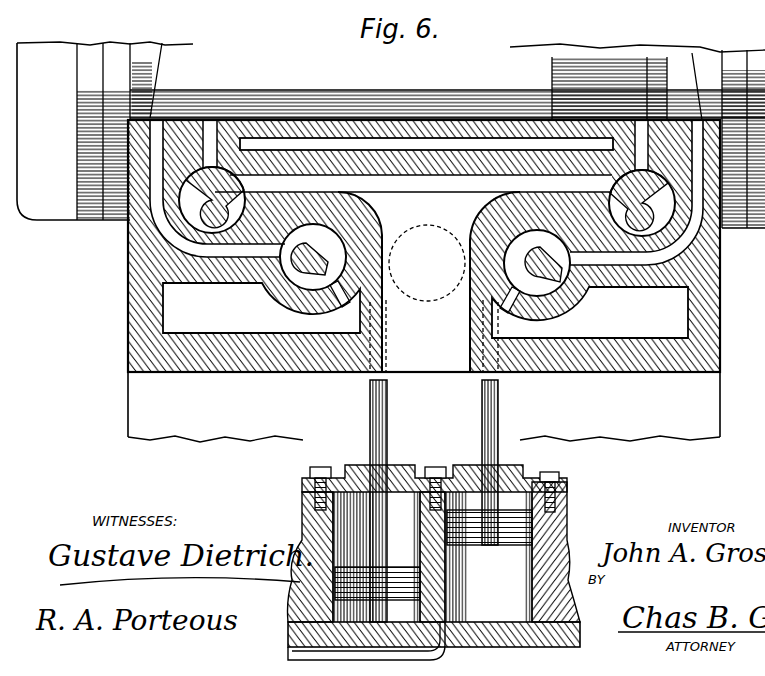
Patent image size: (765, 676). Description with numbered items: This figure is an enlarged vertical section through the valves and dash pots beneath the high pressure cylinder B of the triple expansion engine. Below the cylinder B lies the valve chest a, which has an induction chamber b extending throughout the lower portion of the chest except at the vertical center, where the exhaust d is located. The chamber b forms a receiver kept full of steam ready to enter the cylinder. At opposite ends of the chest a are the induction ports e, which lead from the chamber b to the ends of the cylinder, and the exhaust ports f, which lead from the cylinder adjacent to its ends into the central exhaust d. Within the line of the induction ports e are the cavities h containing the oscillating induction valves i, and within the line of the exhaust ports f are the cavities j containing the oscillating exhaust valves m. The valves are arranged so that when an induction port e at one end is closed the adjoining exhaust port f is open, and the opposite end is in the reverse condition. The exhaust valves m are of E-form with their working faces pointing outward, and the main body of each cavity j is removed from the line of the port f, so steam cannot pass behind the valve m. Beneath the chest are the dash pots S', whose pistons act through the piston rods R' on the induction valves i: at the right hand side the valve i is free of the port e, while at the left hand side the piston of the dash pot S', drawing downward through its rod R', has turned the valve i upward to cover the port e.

The valve chest a is at (433, 246).
The induction chamber b is at (425, 309).
The exhaust d is at (429, 282).
The induction port e is at (426, 193).
The exhaust port f is at (424, 156).
The cavity h is at (425, 260).
The oscillating induction valve i is at (426, 262).
The cavity j is at (427, 201).
The oscillating exhaust valve m is at (427, 199).
The cylinder B is at (391, 135).
The piston rod R' is at (445, 501).
The dash pot S' is at (428, 543).